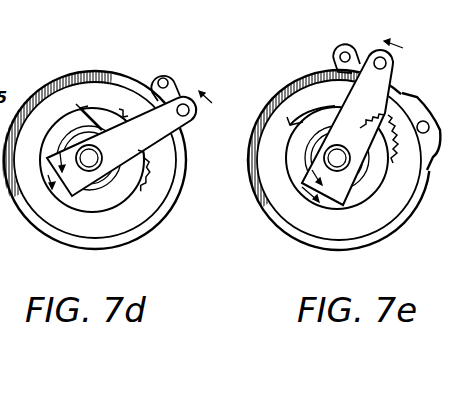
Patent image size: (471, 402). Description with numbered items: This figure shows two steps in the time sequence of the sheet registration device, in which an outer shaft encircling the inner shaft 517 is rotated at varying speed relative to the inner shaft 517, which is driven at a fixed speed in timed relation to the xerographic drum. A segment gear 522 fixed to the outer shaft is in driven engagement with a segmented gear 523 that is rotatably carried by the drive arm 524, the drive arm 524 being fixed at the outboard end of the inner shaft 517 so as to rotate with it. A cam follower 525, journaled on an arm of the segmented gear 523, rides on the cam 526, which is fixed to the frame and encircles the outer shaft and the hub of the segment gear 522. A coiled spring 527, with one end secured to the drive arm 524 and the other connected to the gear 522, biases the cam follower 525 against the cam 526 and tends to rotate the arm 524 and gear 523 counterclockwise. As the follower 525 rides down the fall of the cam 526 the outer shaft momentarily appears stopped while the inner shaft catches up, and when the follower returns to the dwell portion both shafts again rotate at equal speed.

In FIG. 7D, the inner shaft 517 is at (103, 140).
In FIG. 7E, the inner shaft 517 is at (365, 128).
In FIG. 7D, the segment gear 522 is at (83, 210).
In FIG. 7E, the segment gear 522 is at (338, 208).
In FIG. 7D, the segmented gear 523 is at (190, 143).
In FIG. 7E, the segmented gear 523 is at (402, 72).
In FIG. 7D, the drive arm 524 is at (191, 122).
In FIG. 7E, the drive arm 524 is at (342, 104).
In FIG. 7D, the cam follower 525 is at (178, 78).
In FIG. 7E, the cam follower 525 is at (345, 48).
In FIG. 7E, the cam 526 is at (421, 101).
In FIG. 7D, the coiled spring 527 is at (83, 107).
In FIG. 7E, the coiled spring 527 is at (285, 105).